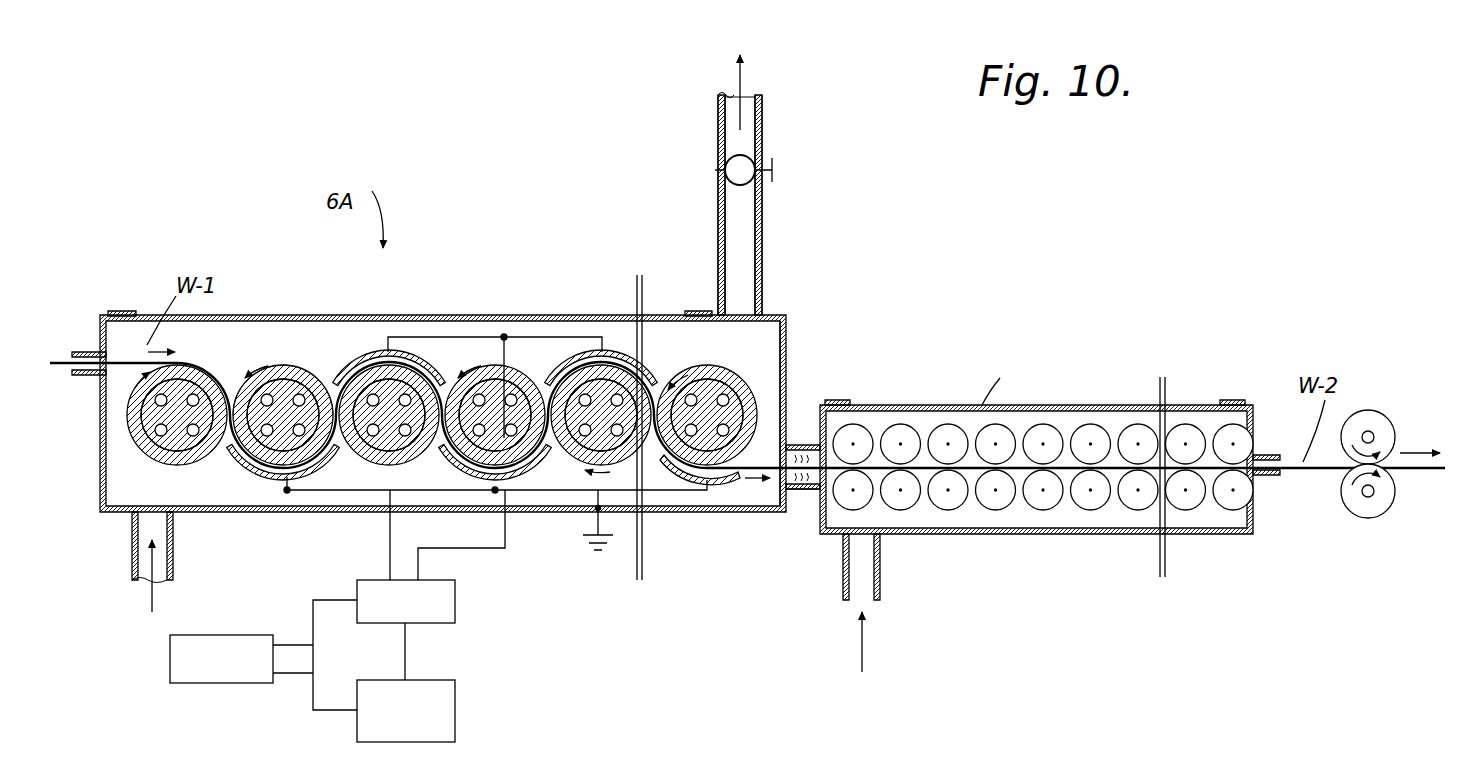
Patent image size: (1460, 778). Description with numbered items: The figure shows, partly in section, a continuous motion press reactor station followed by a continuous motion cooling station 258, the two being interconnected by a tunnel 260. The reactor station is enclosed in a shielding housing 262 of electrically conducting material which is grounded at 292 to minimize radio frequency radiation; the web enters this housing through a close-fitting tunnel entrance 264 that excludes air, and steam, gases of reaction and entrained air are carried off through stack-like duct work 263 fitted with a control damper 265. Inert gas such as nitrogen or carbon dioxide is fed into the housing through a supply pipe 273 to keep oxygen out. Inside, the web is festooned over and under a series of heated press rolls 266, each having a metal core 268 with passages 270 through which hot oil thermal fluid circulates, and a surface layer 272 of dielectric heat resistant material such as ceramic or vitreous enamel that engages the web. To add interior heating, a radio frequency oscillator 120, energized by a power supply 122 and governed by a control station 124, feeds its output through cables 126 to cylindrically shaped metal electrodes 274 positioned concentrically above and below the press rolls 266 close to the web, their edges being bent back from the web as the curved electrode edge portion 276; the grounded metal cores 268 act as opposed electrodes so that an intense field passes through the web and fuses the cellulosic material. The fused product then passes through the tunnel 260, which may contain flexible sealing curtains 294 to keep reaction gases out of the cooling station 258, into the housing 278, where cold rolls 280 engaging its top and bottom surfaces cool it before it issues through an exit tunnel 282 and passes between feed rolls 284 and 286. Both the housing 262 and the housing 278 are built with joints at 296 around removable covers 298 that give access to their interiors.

The radio frequency oscillator 120 is at (455, 616).
The power supply 122 is at (457, 719).
The control station 124 is at (220, 684).
The cables 126 is at (393, 527).
The cooling station 258 is at (1036, 435).
The tunnel 260 is at (805, 490).
The shielding housing 262 is at (340, 512).
The duct work 263 is at (762, 232).
The tunnel entrance 264 is at (80, 345).
The control damper 265 is at (746, 160).
The heated press rolls 266 is at (297, 346).
The metal core 268 is at (703, 382).
The passages 270 is at (150, 440).
The surface layer 272 is at (790, 325).
The supply pipe 273 is at (173, 568).
The electrodes 274 is at (350, 345).
The curved electrode edge portion 276 is at (330, 365).
The housing 278 is at (1045, 534).
The cold rolls 280 is at (883, 409).
The exit tunnel 282 is at (1265, 478).
The feed roll 284 is at (1362, 412).
The feed roll 286 is at (1365, 520).
The ground 292 is at (637, 520).
The flexible sealing curtains 294 is at (805, 445).
The joints 296 is at (120, 311).
The removable covers 298 is at (408, 315).